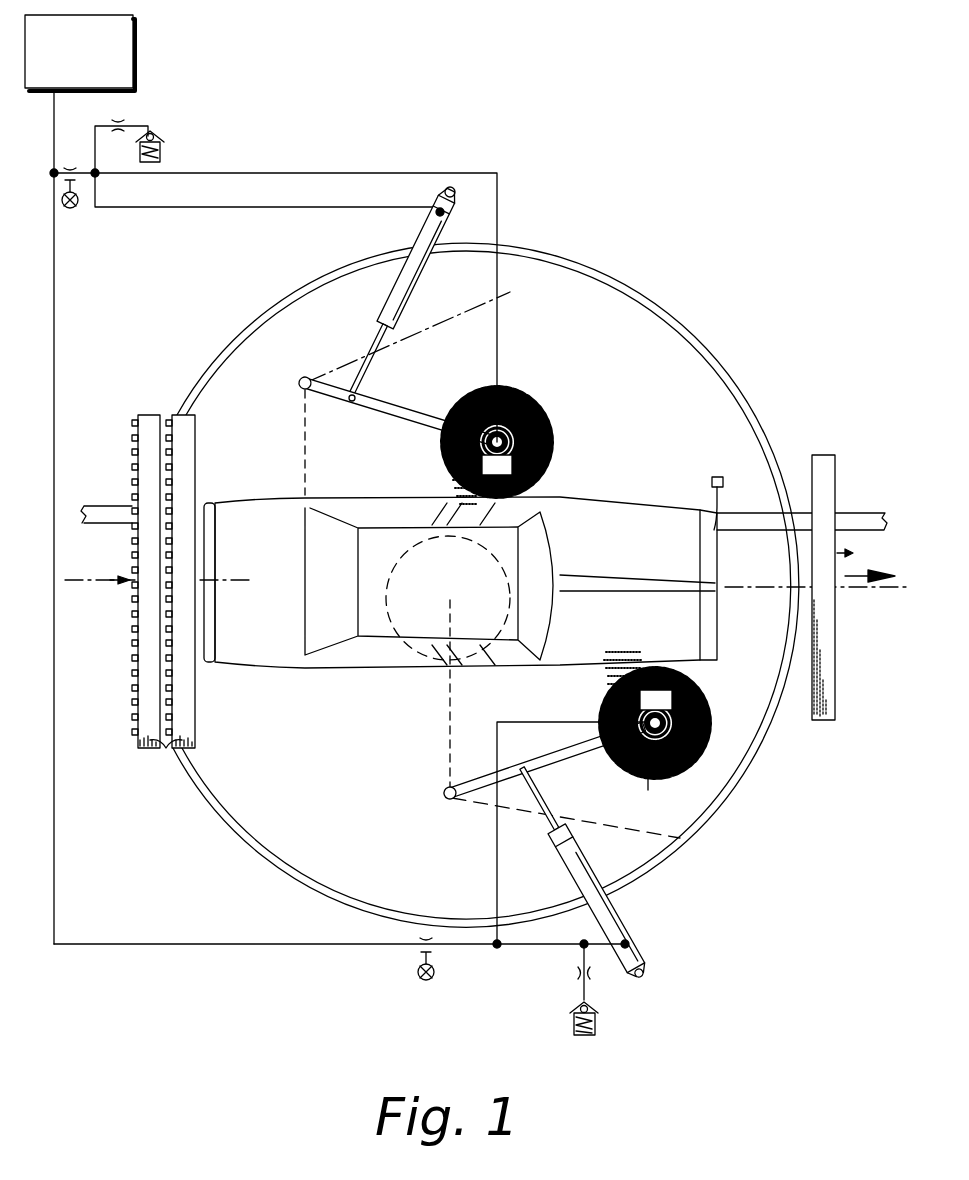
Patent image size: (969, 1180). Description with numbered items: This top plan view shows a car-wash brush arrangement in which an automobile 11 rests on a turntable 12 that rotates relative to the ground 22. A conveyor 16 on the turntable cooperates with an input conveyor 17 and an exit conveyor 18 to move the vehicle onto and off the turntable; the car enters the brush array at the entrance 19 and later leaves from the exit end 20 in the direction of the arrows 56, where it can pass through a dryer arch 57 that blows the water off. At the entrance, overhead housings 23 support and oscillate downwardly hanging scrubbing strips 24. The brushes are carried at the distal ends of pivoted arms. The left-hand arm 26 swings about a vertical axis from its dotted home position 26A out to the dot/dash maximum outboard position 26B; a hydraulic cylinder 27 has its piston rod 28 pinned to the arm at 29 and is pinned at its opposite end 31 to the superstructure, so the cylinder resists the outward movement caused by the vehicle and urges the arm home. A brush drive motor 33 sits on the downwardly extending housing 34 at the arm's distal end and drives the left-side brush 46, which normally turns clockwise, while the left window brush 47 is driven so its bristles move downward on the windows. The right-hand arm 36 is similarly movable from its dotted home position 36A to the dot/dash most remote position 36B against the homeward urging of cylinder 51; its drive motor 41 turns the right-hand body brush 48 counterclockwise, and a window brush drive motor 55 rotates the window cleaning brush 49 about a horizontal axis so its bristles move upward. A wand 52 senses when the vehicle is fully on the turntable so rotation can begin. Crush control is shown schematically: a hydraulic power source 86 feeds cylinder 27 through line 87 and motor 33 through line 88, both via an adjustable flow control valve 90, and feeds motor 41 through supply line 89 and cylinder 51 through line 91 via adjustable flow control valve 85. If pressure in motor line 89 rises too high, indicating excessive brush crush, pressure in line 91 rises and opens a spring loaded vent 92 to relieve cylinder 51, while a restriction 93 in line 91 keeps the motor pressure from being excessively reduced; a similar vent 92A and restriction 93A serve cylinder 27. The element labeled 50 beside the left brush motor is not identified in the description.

The automobile 11 is at (628, 498).
The turntable 12 is at (768, 458).
The conveyor 16 is at (770, 520).
The input conveyor 17 is at (94, 515).
The exit conveyor 18 is at (866, 518).
The entrance to the brush array 19 is at (111, 580).
The turntable exit end 20 is at (856, 551).
The ground 22 is at (97, 653).
The overhead housings 23 is at (166, 752).
The scrubbing strips 24 is at (132, 696).
The left-hand arm 26 is at (387, 404).
The home position 26A is at (340, 470).
The maximum outboard position 26B is at (452, 320).
The hydraulic cylinder 27 is at (437, 232).
The piston rod 28 is at (372, 342).
The pin connection 29 is at (349, 405).
The cylinder end 31 is at (444, 191).
The brush drive motor 33 is at (494, 414).
The downwardly extending housing 34 is at (490, 410).
The arm 36 is at (532, 764).
The home position 36A is at (436, 736).
The most remote position 36B is at (584, 820).
The drive motor 41 is at (655, 750).
The left-side brush 46 is at (556, 435).
The left window brush 47 is at (458, 500).
The right-hand body brush 48 is at (708, 738).
The window cleaning brush 49 is at (610, 680).
The upper brush motor 50 is at (512, 465).
The cylinder 51 is at (568, 868).
The wand 52 is at (720, 500).
The window brush drive motor 55 is at (680, 702).
The arrows 56 is at (862, 574).
The dryer arch 57 is at (827, 698).
The adjustable flow control valve 85 is at (439, 964).
The hydraulic power source 86 is at (89, 68).
The line 87 is at (140, 207).
The line 88 is at (217, 173).
The supply line 89 is at (496, 860).
The adjustable flow control valve 90 is at (78, 188).
The line 91 is at (530, 946).
The spring loaded vent 92 is at (596, 1032).
The spring loaded vent 92A is at (160, 140).
The restriction 93 is at (595, 982).
The restriction 93A is at (131, 123).